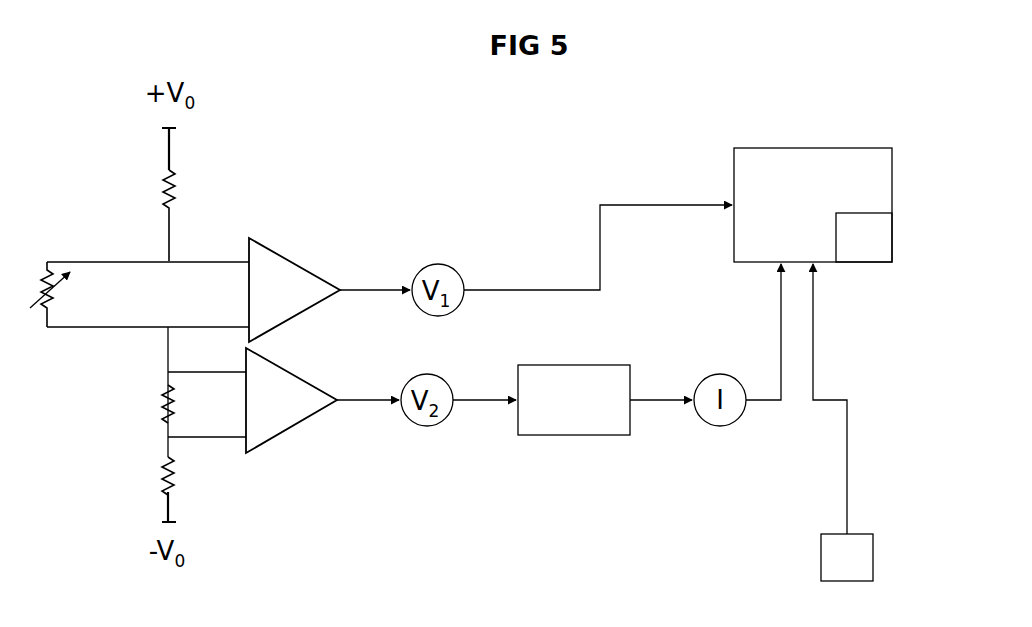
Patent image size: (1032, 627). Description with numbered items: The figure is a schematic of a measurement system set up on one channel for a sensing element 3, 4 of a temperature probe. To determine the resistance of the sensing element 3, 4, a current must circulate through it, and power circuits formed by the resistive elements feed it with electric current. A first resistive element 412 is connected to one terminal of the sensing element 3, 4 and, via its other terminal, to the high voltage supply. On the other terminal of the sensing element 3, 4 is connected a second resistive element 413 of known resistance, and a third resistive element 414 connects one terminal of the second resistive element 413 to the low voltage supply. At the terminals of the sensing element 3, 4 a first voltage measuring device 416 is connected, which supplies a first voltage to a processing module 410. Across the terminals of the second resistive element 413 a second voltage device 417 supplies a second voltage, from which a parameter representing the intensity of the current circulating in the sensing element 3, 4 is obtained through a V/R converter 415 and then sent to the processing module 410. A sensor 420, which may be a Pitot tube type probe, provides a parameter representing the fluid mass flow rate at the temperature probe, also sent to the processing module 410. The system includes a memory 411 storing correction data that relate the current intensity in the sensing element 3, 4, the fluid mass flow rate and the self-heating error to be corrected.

The sensing element 3 is at (69, 318).
The sensing element 4 is at (60, 290).
The processing module 410 is at (812, 147).
The memory 411 is at (862, 264).
The first resistive element 412 is at (163, 190).
The second resistive element 413 is at (160, 405).
The third resistive element 414 is at (160, 475).
The voltage-to-resistance converter 415 is at (573, 436).
The first voltage measuring device 416 is at (295, 263).
The second voltage device 417 is at (290, 426).
The sensor 420 is at (821, 560).